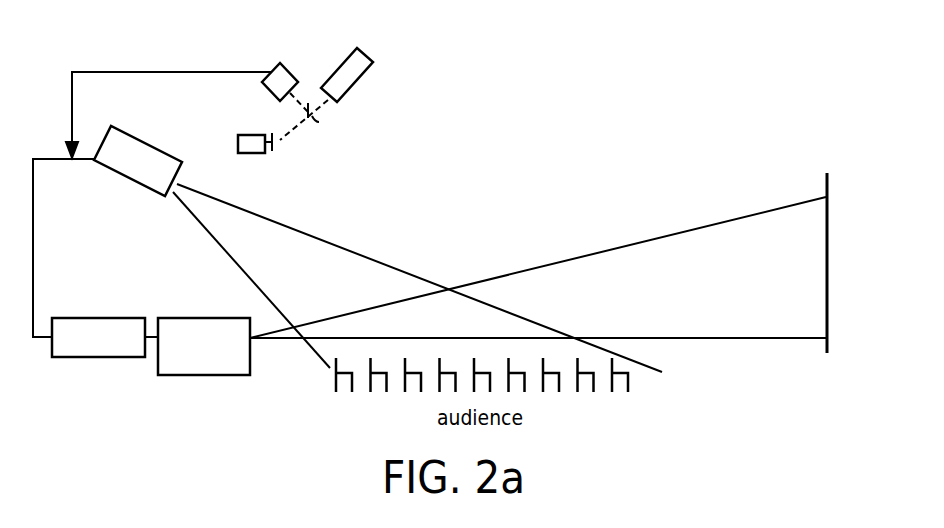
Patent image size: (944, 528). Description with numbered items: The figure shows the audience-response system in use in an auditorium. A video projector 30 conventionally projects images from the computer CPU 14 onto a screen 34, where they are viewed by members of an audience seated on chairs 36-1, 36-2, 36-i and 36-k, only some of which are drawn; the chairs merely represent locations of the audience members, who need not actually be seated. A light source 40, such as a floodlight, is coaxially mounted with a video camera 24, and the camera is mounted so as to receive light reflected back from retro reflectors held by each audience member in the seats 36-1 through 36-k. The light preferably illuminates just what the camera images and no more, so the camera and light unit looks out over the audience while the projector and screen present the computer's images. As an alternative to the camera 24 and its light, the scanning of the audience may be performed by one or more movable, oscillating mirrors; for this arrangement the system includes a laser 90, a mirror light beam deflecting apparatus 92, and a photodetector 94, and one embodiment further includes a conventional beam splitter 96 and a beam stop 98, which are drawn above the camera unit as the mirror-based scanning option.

The computer CPU 14 is at (82, 357).
The video camera 24 is at (129, 178).
The video projector 30 is at (183, 375).
The screen 34 is at (826, 183).
The chair 36-1 is at (337, 392).
The chair 36-2 is at (386, 392).
The chair 36-i is at (509, 390).
The chair 36-k is at (612, 390).
The light source 40 is at (143, 141).
The laser 90 is at (352, 90).
The mirror light beam deflecting apparatus 92 is at (262, 153).
The photodetector 94 is at (291, 75).
The beam splitter 96 is at (298, 108).
The beam stop 98 is at (319, 119).